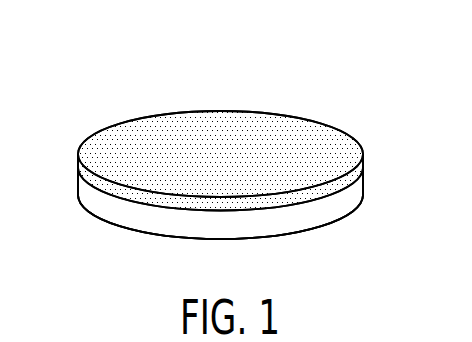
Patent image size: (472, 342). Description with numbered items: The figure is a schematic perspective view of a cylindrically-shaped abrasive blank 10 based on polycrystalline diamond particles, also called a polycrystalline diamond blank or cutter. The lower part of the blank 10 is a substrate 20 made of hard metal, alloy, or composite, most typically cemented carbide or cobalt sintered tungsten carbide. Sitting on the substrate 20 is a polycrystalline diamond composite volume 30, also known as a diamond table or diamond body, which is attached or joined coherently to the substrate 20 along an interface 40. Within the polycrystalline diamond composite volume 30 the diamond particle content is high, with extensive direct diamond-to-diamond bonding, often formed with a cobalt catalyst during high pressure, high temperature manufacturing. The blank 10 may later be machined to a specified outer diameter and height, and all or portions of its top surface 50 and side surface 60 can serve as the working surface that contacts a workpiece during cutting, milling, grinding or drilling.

The abrasive blank 10 is at (327, 95).
The substrate 20 is at (308, 220).
The polycrystalline diamond composite volume 30 is at (338, 148).
The interface 40 is at (348, 188).
The top surface 50 is at (178, 128).
The side surface 60 is at (93, 184).